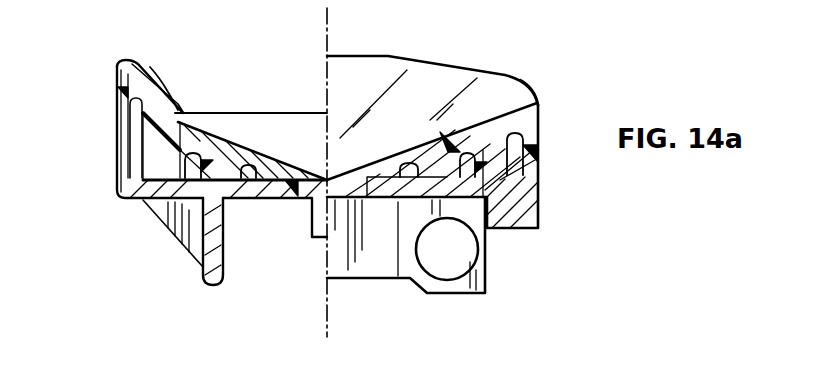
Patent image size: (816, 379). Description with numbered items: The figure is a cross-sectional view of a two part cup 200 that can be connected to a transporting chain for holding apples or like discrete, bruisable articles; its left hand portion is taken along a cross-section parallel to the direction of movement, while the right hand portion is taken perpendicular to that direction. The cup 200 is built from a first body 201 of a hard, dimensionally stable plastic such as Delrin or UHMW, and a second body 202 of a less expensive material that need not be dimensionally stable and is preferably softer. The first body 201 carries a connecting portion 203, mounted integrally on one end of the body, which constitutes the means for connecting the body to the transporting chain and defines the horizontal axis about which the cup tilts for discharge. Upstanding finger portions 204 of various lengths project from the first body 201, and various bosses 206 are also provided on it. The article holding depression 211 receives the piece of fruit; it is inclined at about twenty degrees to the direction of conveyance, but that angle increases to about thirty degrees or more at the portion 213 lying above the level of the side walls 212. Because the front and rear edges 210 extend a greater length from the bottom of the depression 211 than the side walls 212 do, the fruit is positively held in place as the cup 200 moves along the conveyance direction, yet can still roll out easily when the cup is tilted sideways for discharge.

The cup 200 is at (574, 58).
The first body 201 is at (155, 204).
The second body 202 is at (182, 128).
The connecting portion 203 is at (402, 266).
The upstanding finger portions 204 is at (185, 167).
The bosses 206 is at (224, 269).
The front and rear edges 210 is at (133, 58).
The article holding depression 211 is at (294, 148).
The side walls 212 is at (538, 104).
The portion above the level of the side walls 213 is at (180, 107).